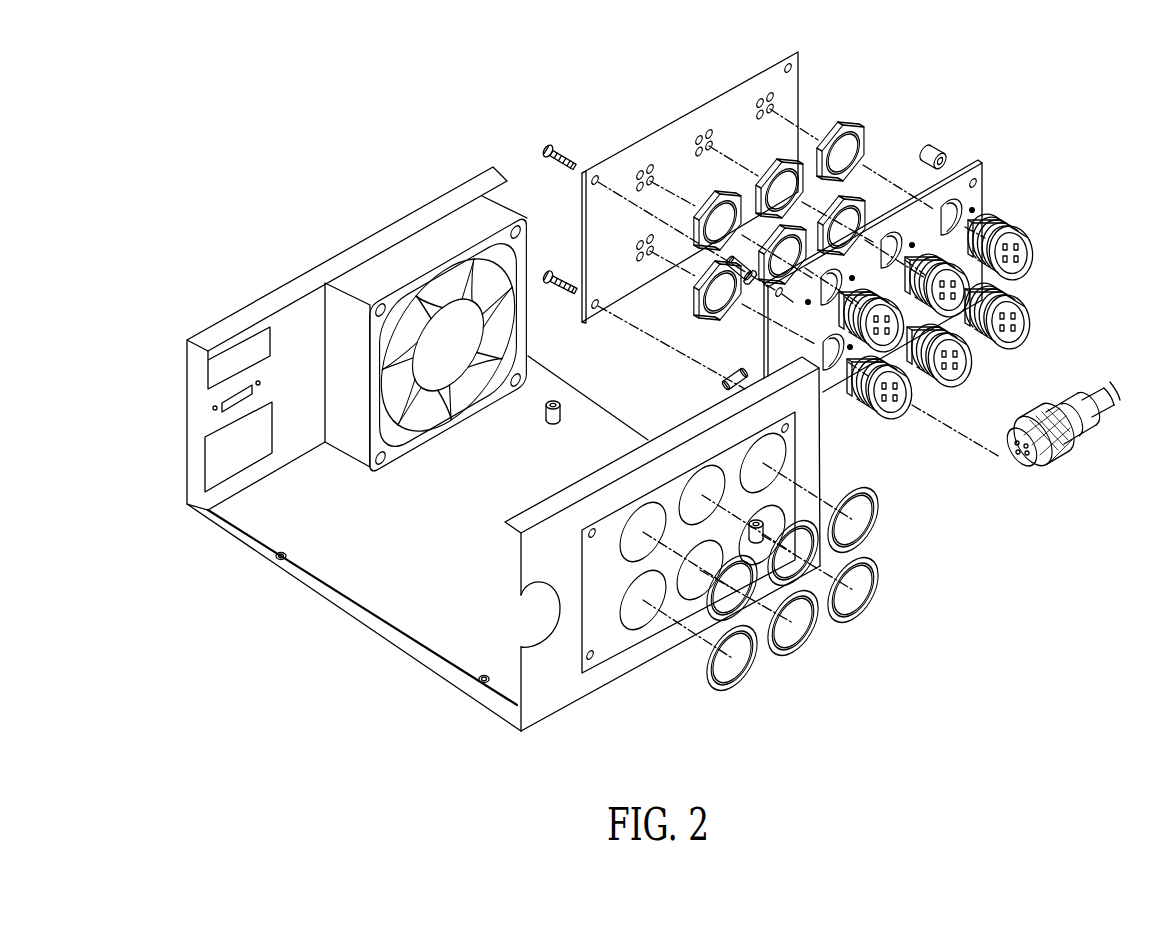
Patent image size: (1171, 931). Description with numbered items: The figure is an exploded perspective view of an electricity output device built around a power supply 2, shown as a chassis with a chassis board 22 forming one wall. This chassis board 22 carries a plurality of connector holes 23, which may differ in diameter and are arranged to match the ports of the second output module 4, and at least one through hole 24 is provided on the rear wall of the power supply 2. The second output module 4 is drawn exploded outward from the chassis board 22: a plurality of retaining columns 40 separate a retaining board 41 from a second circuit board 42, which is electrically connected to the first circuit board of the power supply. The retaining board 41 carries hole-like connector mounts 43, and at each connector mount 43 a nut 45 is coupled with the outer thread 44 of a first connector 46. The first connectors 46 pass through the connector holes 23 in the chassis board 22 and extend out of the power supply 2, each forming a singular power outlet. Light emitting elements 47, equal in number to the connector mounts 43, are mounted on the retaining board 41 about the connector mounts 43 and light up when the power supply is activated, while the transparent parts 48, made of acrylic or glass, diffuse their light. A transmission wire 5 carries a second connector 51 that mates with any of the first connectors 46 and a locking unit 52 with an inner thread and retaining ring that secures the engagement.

The power supply 2 is at (342, 262).
The chassis board 22 is at (581, 562).
The connector holes 23 is at (637, 613).
The through hole 24 is at (545, 612).
The second output module 4 is at (922, 262).
The retaining columns 40 is at (932, 150).
The retaining board 41 is at (837, 378).
The second circuit board 42 is at (678, 138).
The connector mounts 43 is at (950, 204).
The outer thread 44 is at (991, 307).
The nut 45 is at (840, 141).
The first connector 46 is at (1012, 230).
The light emitting elements 47 is at (974, 210).
The transparent parts 48 is at (798, 648).
The transmission wire 5 is at (1076, 457).
The second connector 51 is at (1020, 462).
The locking unit 52 is at (1060, 460).